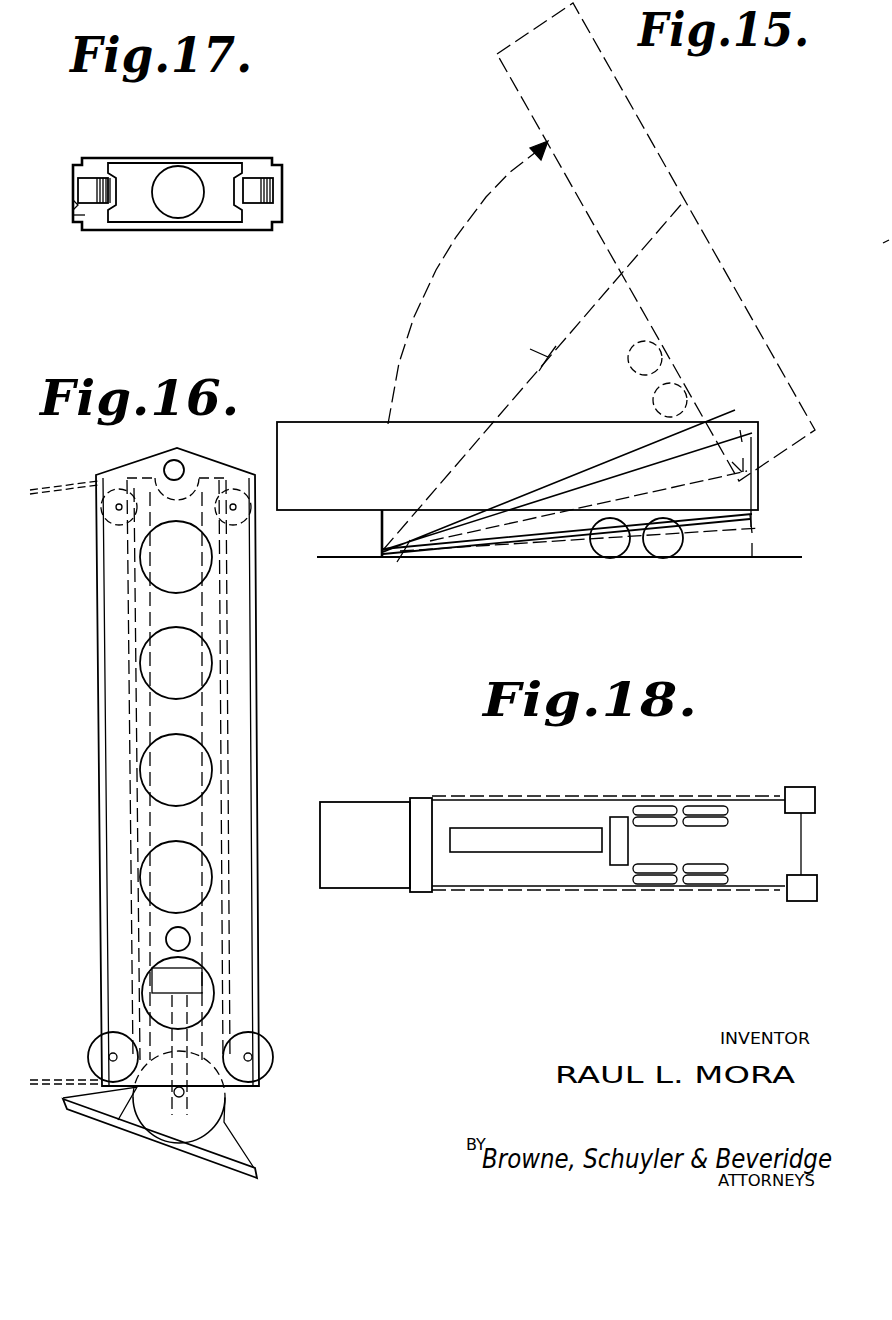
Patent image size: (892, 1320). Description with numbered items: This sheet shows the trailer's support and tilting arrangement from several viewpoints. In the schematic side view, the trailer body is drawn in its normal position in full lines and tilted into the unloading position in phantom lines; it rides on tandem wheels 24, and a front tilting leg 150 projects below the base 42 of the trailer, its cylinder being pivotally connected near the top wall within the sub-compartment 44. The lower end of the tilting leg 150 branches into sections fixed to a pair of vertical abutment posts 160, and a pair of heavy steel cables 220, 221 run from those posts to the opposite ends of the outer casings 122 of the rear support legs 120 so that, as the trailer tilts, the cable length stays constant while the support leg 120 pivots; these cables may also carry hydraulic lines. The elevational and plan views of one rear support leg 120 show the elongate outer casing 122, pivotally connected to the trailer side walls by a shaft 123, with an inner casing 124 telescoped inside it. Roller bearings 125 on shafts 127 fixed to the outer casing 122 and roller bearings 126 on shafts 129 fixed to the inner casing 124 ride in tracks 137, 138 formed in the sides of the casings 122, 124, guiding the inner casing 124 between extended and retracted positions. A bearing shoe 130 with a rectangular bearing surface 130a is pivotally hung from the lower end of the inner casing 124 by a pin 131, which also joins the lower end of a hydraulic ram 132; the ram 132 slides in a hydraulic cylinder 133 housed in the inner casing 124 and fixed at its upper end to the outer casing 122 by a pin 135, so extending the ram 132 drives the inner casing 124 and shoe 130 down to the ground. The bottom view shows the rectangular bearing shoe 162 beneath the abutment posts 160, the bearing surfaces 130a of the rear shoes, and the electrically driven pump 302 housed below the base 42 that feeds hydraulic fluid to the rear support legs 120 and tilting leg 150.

In FIG. 16, the rear support leg 120 is at (262, 632).
In FIG. 15, the rear support leg 120 is at (764, 530).
In FIG. 17, the outer casing 122 is at (218, 231).
In FIG. 16, the outer casing 122 is at (259, 676).
In FIG. 16, the shaft 123 is at (190, 939).
In FIG. 17, the inner casing 124 is at (142, 167).
In FIG. 16, the inner casing 124 is at (214, 594).
In FIG. 16, the roller bearing 125 is at (92, 1054).
In FIG. 17, the roller bearing 126 is at (90, 190).
In FIG. 16, the roller bearing 126 is at (116, 490).
In FIG. 16, the shaft 127 is at (266, 1073).
In FIG. 16, the shaft 129 is at (118, 512).
In FIG. 16, the bearing shoe 130 is at (205, 1144).
In FIG. 16, the rectangular bearing surface 130a is at (104, 1118).
In FIG. 18, the rectangular bearing surface 130a is at (794, 788).
In FIG. 16, the pin 131 is at (178, 1100).
In FIG. 16, the hydraulic ram 132 is at (187, 1010).
In FIG. 17, the hydraulic cylinder 133 is at (204, 176).
In FIG. 16, the hydraulic cylinder 133 is at (194, 717).
In FIG. 16, the pin 135 is at (180, 466).
In FIG. 17, the track 137 is at (78, 216).
In FIG. 17, the track 138 is at (116, 200).
In FIG. 15, the front support leg 150 is at (430, 585).
In FIG. 15, the abutment post 160 is at (377, 531).
In FIG. 15, the cable 220 is at (590, 469).
In FIG. 15, the cable 221 is at (594, 508).
In FIG. 18, the cable 221 is at (576, 800).
In FIG. 18, the base 42 is at (375, 875).
In FIG. 18, the rectangular bearing shoe 162 is at (422, 875).
In FIG. 18, the sub-compartment 44 is at (505, 848).
In FIG. 18, the pump 302 is at (612, 864).
In FIG. 18, the tandem wheels 24 is at (706, 870).